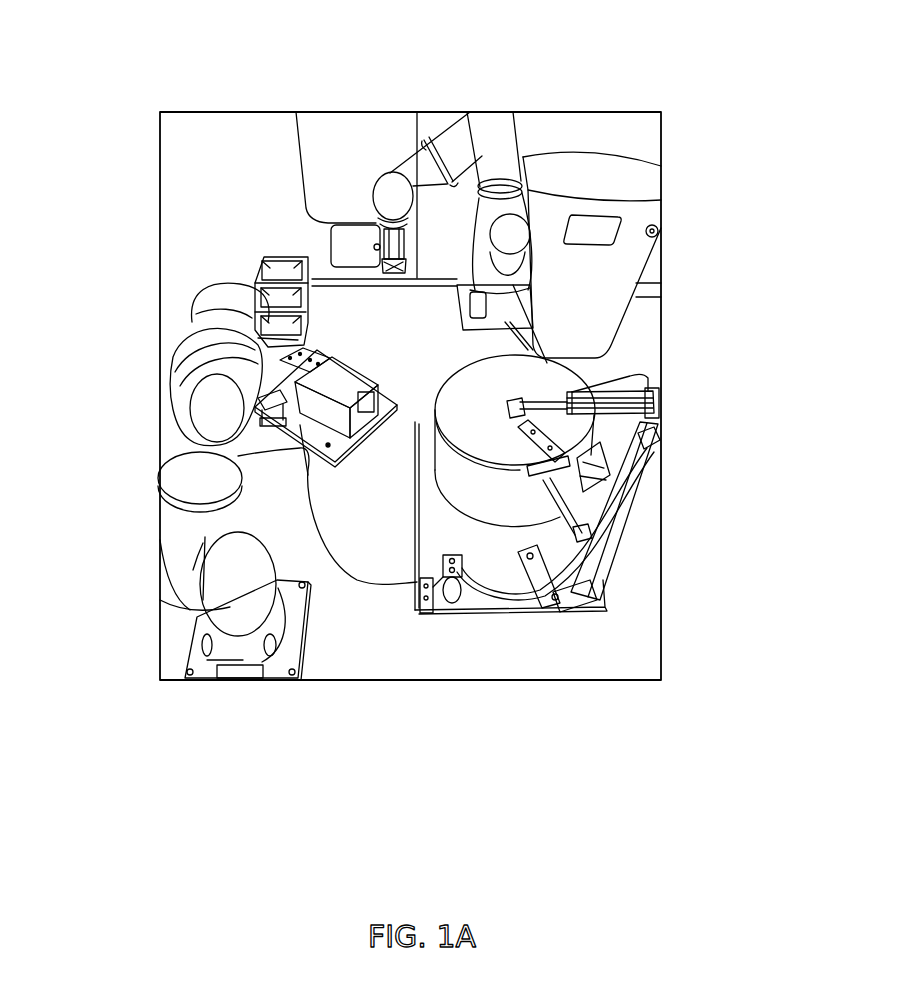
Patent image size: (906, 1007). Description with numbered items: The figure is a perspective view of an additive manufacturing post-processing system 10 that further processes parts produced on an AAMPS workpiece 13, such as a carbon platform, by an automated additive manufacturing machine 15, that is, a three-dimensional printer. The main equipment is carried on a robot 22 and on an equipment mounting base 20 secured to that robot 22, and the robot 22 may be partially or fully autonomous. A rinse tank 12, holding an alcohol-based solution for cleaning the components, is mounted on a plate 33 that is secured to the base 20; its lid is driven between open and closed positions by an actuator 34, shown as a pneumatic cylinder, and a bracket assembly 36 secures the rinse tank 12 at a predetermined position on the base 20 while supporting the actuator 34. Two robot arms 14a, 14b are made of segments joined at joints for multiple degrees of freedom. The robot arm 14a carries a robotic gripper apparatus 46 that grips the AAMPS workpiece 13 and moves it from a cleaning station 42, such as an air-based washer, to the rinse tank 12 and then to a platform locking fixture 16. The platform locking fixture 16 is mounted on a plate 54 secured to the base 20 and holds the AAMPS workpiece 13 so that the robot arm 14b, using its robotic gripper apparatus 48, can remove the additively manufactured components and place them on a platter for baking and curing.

The additive manufacturing post-processing system 10 is at (244, 208).
The rinse tank 12 is at (504, 444).
The AAMPS workpiece 13 is at (350, 395).
The robot arm 14a is at (452, 143).
The robot arm 14b is at (186, 389).
The automated additive manufacturing machine 15 is at (338, 163).
The platform locking fixture 16 is at (316, 356).
The equipment mounting base 20 is at (357, 636).
The robot 22 is at (523, 627).
The plate 33 is at (565, 588).
The actuator 34 is at (627, 390).
The bracket assembly 36 is at (628, 511).
The cleaning station 42 is at (627, 262).
The robotic gripper apparatus 46 is at (395, 232).
The robotic gripper apparatus 48 is at (248, 370).
The plate 54 is at (332, 451).